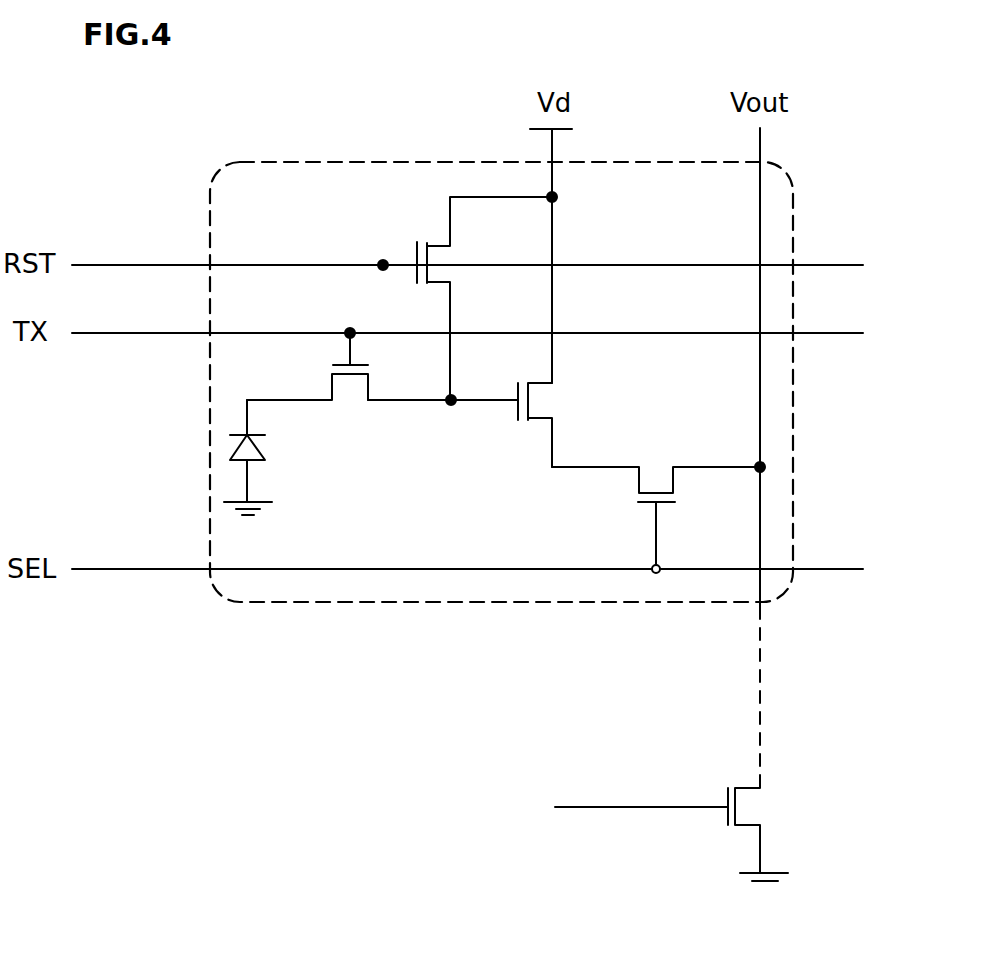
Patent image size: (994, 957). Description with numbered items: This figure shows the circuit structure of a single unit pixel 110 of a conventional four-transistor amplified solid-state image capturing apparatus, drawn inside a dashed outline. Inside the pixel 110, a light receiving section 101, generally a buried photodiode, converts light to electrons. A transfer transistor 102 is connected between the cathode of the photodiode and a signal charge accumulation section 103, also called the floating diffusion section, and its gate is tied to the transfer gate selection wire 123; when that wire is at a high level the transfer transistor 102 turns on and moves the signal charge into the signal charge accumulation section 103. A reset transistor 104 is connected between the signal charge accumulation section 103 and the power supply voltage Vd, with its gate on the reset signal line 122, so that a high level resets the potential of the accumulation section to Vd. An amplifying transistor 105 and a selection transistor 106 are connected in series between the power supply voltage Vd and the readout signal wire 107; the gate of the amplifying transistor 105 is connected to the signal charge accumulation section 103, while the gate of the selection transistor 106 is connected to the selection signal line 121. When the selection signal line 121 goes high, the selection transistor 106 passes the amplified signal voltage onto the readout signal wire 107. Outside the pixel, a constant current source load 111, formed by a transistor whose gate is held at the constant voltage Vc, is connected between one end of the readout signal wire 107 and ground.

The light receiving section 101 is at (262, 446).
The transfer transistor 102 is at (352, 394).
The signal charge accumulation section 103 is at (451, 406).
The reset transistor 104 is at (428, 258).
The amplifying transistor 105 is at (535, 399).
The selection transistor 106 is at (640, 479).
The readout signal wire 107 is at (758, 430).
The pixel 110 is at (366, 163).
The constant current source load 111 is at (743, 806).
The selection signal line 121 is at (840, 568).
The reset signal line 122 is at (840, 266).
The transfer gate selection wire 123 is at (840, 333).